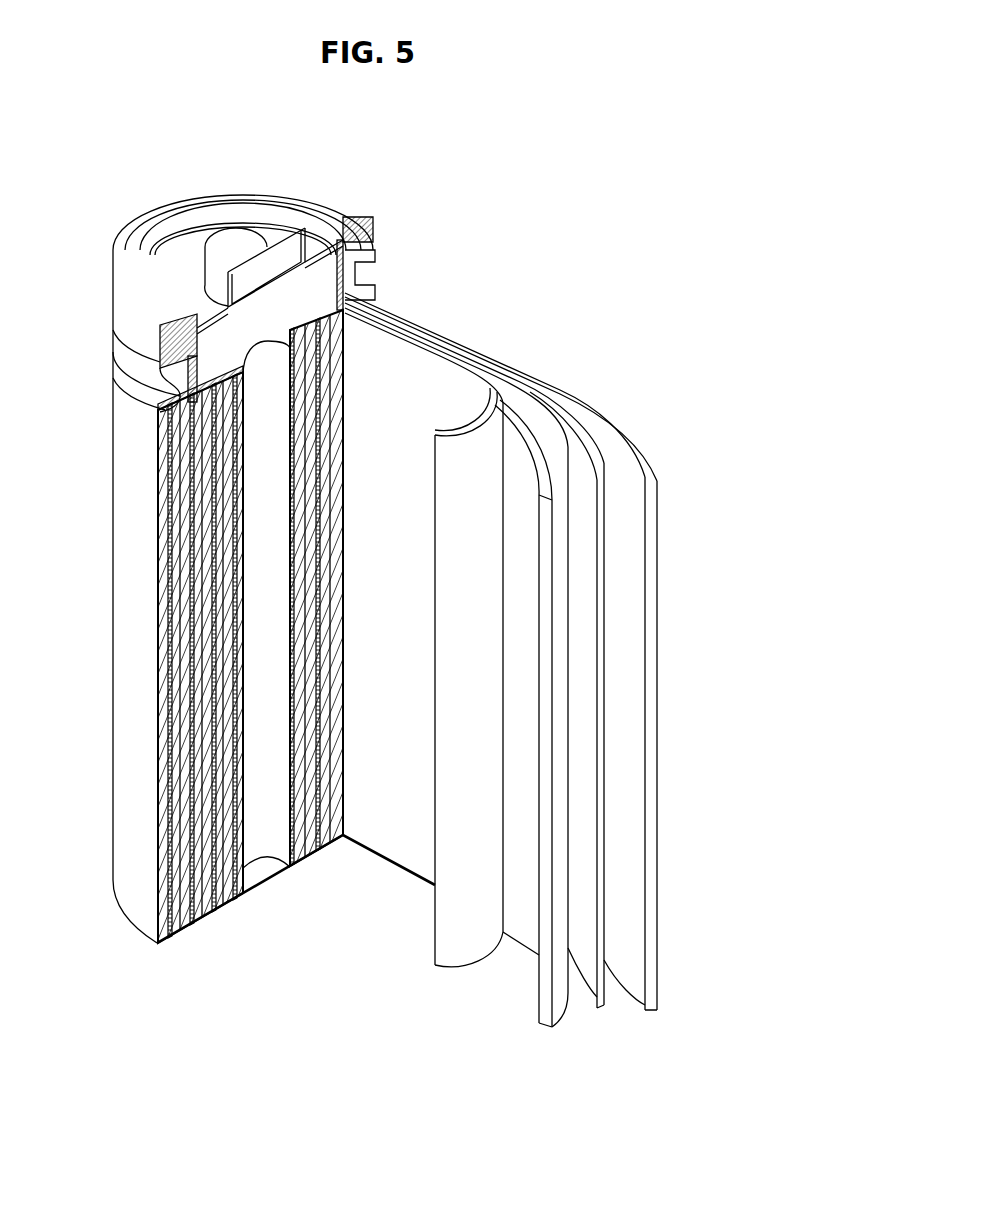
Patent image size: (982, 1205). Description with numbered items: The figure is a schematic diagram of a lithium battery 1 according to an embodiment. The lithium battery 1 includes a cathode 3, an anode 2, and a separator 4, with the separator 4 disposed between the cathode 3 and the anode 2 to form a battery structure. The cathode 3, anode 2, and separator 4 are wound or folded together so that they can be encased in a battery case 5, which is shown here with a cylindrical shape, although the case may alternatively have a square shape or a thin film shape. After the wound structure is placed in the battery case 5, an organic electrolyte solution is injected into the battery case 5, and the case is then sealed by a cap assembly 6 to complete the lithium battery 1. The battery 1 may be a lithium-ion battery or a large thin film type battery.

The lithium battery 1 is at (524, 209).
The anode 2 is at (632, 447).
The cathode 3 is at (557, 443).
The separator 4 is at (470, 440).
The battery case 5 is at (120, 613).
The cap assembly 6 is at (234, 238).